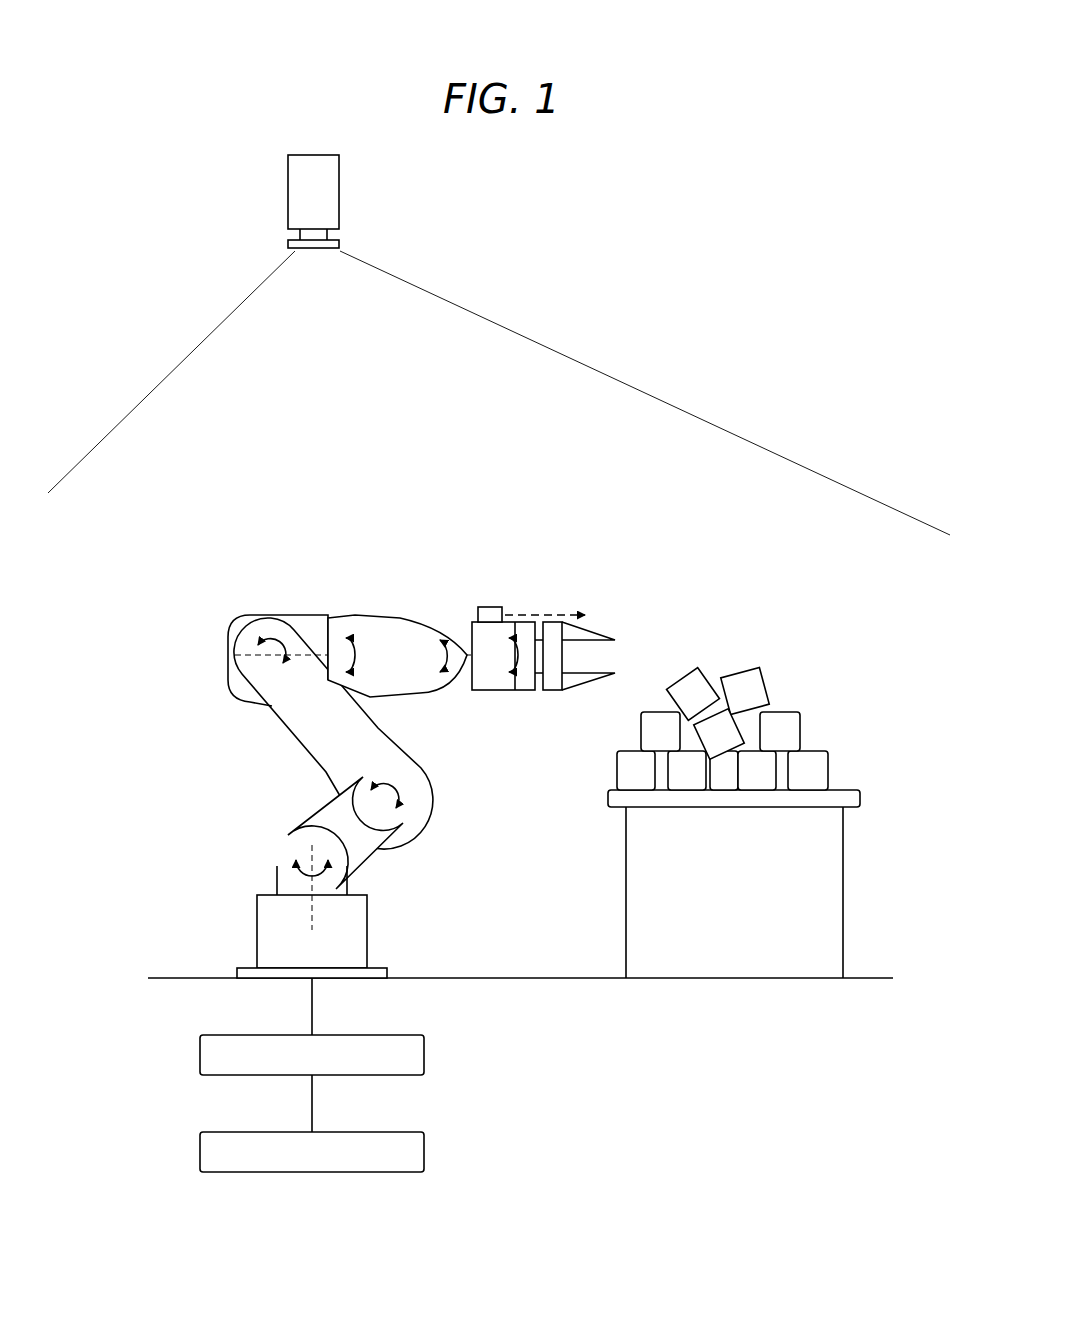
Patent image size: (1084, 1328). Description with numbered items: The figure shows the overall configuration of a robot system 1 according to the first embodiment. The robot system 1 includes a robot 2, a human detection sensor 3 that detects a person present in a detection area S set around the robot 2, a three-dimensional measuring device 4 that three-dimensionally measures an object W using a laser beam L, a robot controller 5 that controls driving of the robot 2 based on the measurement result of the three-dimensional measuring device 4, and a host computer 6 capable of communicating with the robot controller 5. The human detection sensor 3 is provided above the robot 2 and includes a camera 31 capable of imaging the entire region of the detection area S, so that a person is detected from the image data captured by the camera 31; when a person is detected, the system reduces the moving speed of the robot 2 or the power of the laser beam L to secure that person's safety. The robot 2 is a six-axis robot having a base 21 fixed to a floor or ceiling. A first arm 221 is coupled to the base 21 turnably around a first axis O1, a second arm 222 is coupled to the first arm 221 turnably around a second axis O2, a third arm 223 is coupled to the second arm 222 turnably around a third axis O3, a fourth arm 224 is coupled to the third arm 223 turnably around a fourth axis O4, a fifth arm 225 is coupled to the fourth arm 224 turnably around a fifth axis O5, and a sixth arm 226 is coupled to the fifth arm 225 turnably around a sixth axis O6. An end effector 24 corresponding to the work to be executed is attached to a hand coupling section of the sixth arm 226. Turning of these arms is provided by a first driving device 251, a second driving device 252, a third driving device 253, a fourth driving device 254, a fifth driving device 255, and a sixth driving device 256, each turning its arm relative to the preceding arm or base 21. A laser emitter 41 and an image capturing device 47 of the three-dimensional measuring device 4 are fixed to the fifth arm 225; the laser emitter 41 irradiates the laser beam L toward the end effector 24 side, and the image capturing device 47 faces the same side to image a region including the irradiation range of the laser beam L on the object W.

The robot system 1 is at (697, 260).
The robot 2 is at (401, 603).
The human detection sensor 3 is at (312, 201).
The camera 31 is at (300, 191).
The three-dimensional measuring device 4 is at (487, 553).
The laser emitter 41 is at (473, 574).
The image capturing device 47 is at (490, 608).
The robot controller 5 is at (426, 1052).
The host computer 6 is at (426, 1150).
The base 21 is at (364, 941).
The first arm 221 is at (288, 849).
The second arm 222 is at (293, 745).
The third arm 223 is at (238, 636).
The fourth arm 224 is at (336, 628).
The fifth arm 225 is at (496, 690).
The sixth arm 226 is at (526, 690).
The end effector 24 is at (581, 680).
The first driving device 251 is at (285, 890).
The second driving device 252 is at (386, 815).
The third driving device 253 is at (262, 637).
The fourth driving device 254 is at (306, 668).
The fifth driving device 255 is at (443, 628).
The sixth driving device 256 is at (520, 612).
The first axis O1 is at (312, 900).
The second axis O2 is at (386, 808).
The third axis O3 is at (248, 655).
The fourth axis O4 is at (348, 648).
The fifth axis O5 is at (443, 656).
The sixth axis O6 is at (510, 657).
The detection area S is at (360, 393).
The laser beam L is at (557, 615).
The object W is at (690, 680).